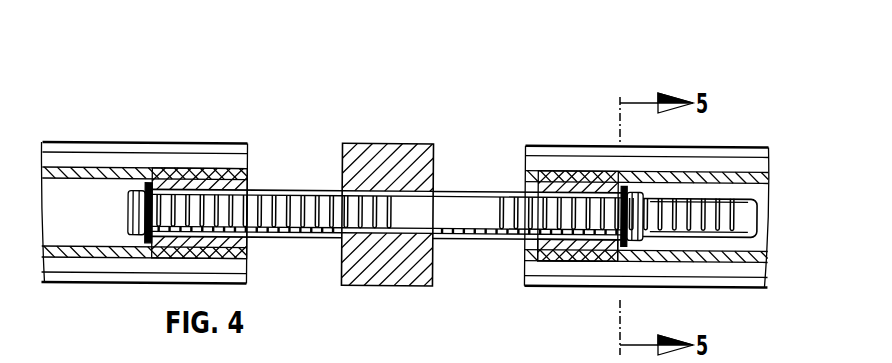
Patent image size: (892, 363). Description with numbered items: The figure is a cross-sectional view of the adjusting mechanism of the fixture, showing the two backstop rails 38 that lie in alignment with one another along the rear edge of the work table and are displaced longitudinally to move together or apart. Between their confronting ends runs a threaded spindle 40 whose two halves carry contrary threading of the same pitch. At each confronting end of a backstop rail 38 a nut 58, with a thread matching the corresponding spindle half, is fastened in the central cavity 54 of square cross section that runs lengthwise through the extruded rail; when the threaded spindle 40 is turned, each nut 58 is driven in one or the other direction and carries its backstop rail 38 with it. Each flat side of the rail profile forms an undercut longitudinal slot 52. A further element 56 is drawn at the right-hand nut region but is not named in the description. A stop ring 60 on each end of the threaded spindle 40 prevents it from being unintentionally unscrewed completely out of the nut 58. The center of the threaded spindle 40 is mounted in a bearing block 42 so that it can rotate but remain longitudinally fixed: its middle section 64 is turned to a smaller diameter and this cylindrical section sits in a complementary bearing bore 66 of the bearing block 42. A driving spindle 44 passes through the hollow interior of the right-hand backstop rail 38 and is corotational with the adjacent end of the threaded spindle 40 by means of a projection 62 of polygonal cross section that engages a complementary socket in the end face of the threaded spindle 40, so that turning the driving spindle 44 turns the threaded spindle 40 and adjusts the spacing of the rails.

The backstop rails 38 is at (105, 133).
The threaded spindle 40 is at (281, 240).
The bearing block 42 is at (413, 167).
The driving spindle 44 is at (743, 210).
The undercut longitudinal slot 52 is at (167, 160).
The central cavity 54 is at (766, 243).
The nut 56 is at (541, 194).
The nut 58 is at (545, 249).
The stop ring 60 is at (145, 185).
The projection 62 is at (643, 243).
The middle section 64 is at (362, 207).
The bearing bore 66 is at (403, 228).